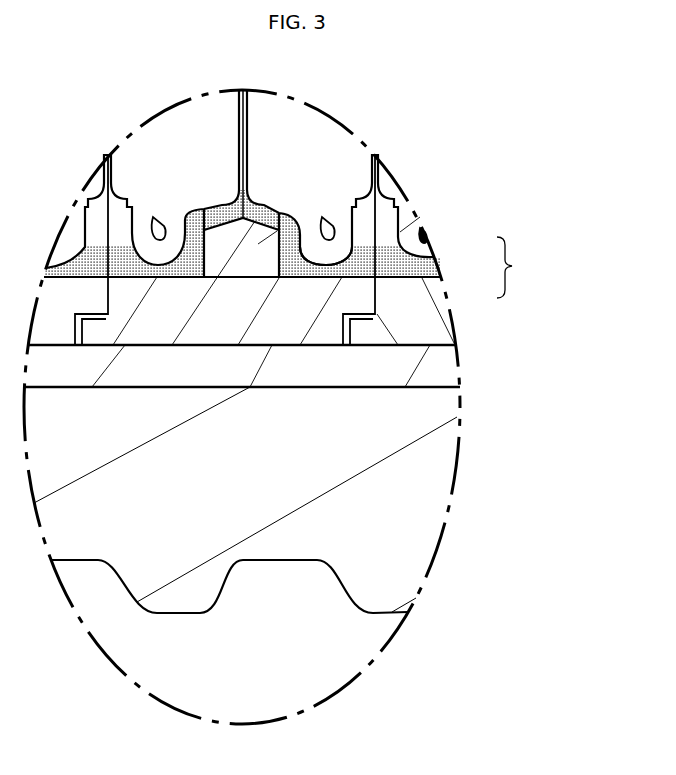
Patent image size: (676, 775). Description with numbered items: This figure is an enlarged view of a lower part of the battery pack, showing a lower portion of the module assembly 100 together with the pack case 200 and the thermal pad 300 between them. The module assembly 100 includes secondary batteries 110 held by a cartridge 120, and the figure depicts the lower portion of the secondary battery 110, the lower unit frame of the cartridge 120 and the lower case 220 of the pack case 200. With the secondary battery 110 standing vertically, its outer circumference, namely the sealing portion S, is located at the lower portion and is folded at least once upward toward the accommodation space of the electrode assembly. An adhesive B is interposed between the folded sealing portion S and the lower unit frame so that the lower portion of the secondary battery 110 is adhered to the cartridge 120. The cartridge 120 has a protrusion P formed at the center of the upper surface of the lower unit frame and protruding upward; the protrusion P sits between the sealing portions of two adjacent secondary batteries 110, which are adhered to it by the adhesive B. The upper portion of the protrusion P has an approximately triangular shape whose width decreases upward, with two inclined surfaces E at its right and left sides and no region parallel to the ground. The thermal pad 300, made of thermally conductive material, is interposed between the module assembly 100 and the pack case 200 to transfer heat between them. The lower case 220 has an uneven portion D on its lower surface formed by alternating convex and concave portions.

The module assembly 100 is at (297, 209).
The secondary battery 110 is at (172, 118).
The cartridge 120 is at (307, 308).
The thermal pad 300 is at (442, 371).
The pack case 200 is at (307, 500).
The lower case 220 is at (230, 586).
The protrusion P is at (283, 215).
The inclined surfaces E is at (264, 203).
The sealing portion S is at (320, 249).
The adhesive B is at (85, 313).
The uneven portion D is at (274, 586).